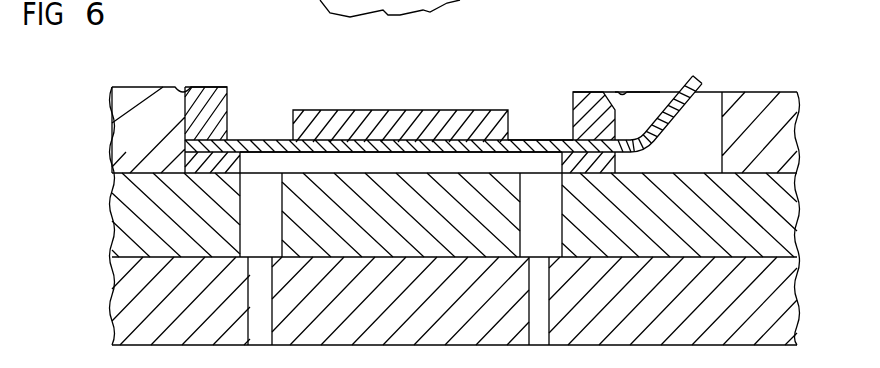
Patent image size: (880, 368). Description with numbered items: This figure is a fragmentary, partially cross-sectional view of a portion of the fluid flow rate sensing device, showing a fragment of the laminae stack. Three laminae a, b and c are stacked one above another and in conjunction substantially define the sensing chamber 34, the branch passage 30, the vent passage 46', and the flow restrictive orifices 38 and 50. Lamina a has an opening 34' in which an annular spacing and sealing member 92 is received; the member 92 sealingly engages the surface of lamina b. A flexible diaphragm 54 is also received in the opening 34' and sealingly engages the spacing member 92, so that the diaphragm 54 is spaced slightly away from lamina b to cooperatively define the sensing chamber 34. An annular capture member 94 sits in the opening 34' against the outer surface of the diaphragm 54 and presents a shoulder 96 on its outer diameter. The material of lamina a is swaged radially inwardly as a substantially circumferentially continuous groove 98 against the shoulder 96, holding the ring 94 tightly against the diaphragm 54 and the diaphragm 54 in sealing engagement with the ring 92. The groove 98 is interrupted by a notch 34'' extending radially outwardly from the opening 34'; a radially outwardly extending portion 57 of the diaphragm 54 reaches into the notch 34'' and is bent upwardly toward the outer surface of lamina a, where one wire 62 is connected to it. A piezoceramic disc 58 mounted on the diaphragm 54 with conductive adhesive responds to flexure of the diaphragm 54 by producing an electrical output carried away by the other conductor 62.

The lamina a is at (118, 132).
The lamina b is at (125, 218).
The lamina c is at (125, 312).
The annular spacing and sealing member 92 is at (183, 148).
The annular capture member 94 is at (213, 113).
The opening of lamina a 34' is at (400, 99).
The sensing chamber 34 is at (401, 104).
The piezoceramic disc 58 is at (352, 112).
The wire 62 is at (402, 106).
The flexible diaphragm 54 is at (526, 142).
The swaged groove 98 is at (621, 92).
The shoulder 96 is at (616, 122).
The notch 34'' is at (757, 109).
The radially outwardly extending portion of diaphragm 57 is at (672, 109).
The branch passage 30 is at (242, 236).
The flow restrictive orifice 38 is at (252, 320).
The vent passage 46' is at (568, 215).
The flow restrictive orifice 50 is at (551, 318).